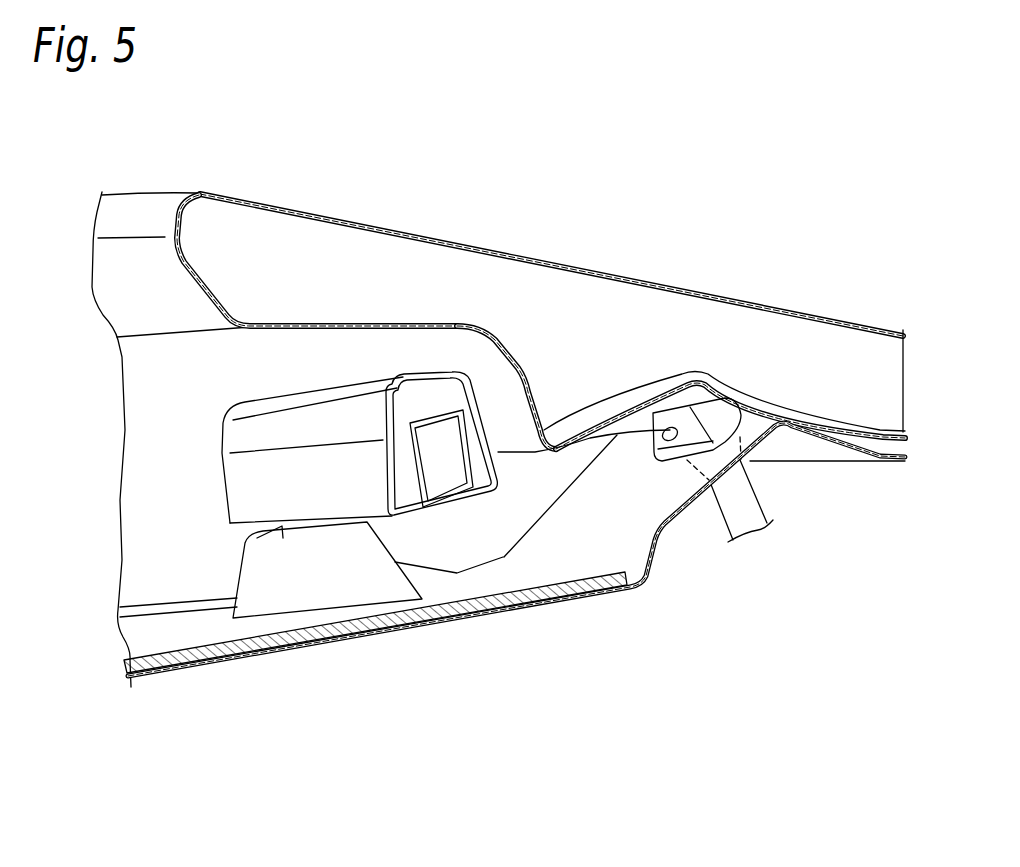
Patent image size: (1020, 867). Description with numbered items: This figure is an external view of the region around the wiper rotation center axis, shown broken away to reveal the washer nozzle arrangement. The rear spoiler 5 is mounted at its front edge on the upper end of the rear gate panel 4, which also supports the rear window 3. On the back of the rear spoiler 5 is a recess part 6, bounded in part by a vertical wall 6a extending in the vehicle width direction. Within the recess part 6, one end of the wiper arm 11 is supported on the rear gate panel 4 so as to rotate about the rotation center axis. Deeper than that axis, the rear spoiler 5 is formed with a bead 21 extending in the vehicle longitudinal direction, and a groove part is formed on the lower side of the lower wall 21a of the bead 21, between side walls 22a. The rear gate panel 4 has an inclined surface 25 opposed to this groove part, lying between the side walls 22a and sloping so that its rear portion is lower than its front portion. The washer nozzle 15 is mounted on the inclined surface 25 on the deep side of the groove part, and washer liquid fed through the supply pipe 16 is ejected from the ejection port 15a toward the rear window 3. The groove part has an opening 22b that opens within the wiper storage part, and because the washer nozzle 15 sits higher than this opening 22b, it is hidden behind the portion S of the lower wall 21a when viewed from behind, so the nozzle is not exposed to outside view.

The rear window 3 is at (160, 633).
The rear gate panel 4 is at (887, 462).
The rear spoiler 5 is at (568, 262).
The recess part 6 is at (383, 350).
The vertical wall of the recess part 6a is at (500, 380).
The wiper arm 11 is at (303, 400).
The washer nozzle 15 is at (687, 407).
The ejection port 15a is at (650, 440).
The supply pipe 16 is at (760, 503).
The bead 21 is at (573, 417).
The lower wall of the bead 21a is at (603, 413).
The side walls of the groove part 22a is at (468, 533).
The opening of the groove part 22b is at (550, 450).
The inclined surface 25 is at (652, 507).
The portion of the lower wall of the bead S is at (526, 440).